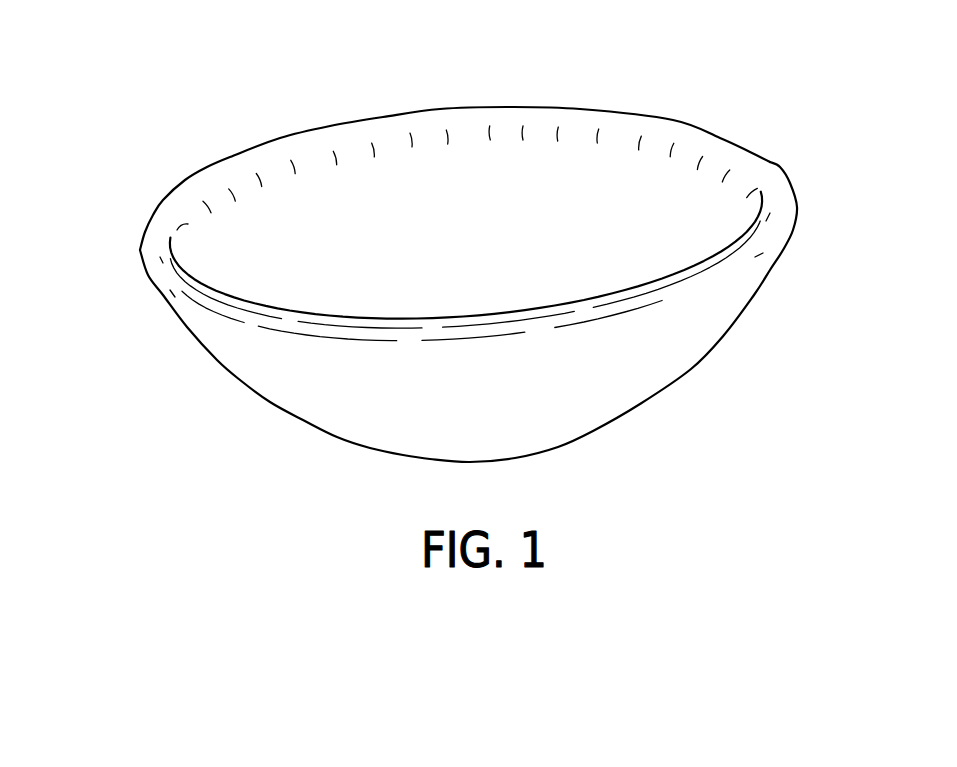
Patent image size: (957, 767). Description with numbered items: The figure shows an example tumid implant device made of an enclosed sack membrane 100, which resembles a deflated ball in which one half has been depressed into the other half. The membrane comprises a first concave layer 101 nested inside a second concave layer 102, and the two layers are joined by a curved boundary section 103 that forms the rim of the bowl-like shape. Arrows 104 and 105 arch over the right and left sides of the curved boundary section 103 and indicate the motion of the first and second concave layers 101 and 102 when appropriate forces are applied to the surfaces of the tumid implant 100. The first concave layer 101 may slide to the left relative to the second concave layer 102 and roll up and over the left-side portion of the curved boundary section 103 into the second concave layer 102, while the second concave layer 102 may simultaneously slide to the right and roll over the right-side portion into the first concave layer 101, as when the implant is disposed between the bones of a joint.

The enclosed sack membrane 100 is at (462, 264).
The first concave layer 101 is at (405, 250).
The second concave layer 102 is at (412, 412).
The curved boundary section 103 is at (617, 320).
The arrow 104 is at (721, 227).
The arrow 105 is at (217, 270).